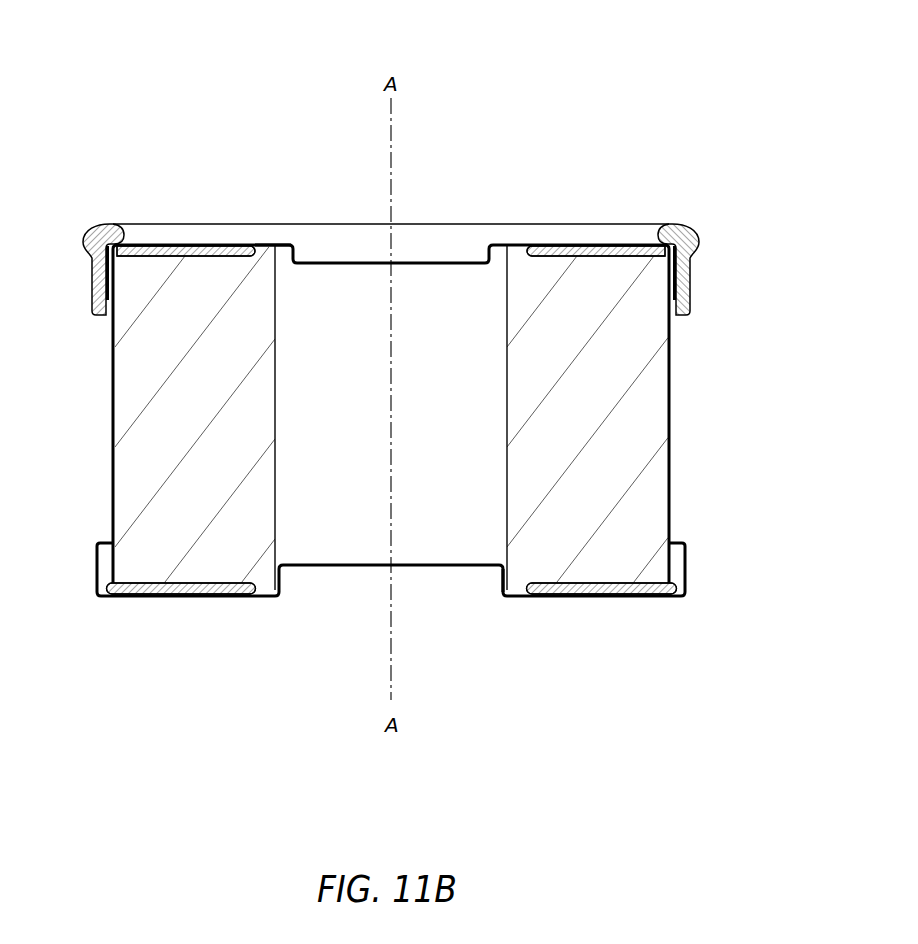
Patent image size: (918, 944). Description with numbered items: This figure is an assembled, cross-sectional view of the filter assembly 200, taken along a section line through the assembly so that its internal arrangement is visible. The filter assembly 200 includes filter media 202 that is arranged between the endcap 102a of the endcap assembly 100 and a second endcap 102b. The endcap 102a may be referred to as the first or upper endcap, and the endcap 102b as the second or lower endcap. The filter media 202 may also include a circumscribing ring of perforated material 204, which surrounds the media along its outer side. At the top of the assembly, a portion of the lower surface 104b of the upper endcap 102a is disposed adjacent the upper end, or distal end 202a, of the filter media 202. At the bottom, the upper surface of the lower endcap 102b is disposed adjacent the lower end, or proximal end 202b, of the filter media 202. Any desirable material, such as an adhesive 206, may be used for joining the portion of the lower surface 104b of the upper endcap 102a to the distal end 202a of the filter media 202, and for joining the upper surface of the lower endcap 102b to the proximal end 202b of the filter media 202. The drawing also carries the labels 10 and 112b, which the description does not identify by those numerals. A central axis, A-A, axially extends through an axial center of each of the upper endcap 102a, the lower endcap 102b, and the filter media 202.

The filter assembly 200 is at (173, 66).
The circumscribing ring of perforated material 204 is at (107, 387).
The filter media 202 is at (142, 472).
The upper end/distal end of the filter media 202a is at (312, 299).
The lower end/proximal end of the filter media 202b is at (497, 540).
The adhesive 206 is at (580, 254).
The endcap assembly 100 is at (770, 255).
The lid 10 is at (704, 256).
The endcap 102a is at (683, 294).
The endcap 102b is at (89, 572).
The lower surface of the upper endcap 104b is at (270, 254).
The base inner surface 112b is at (514, 590).